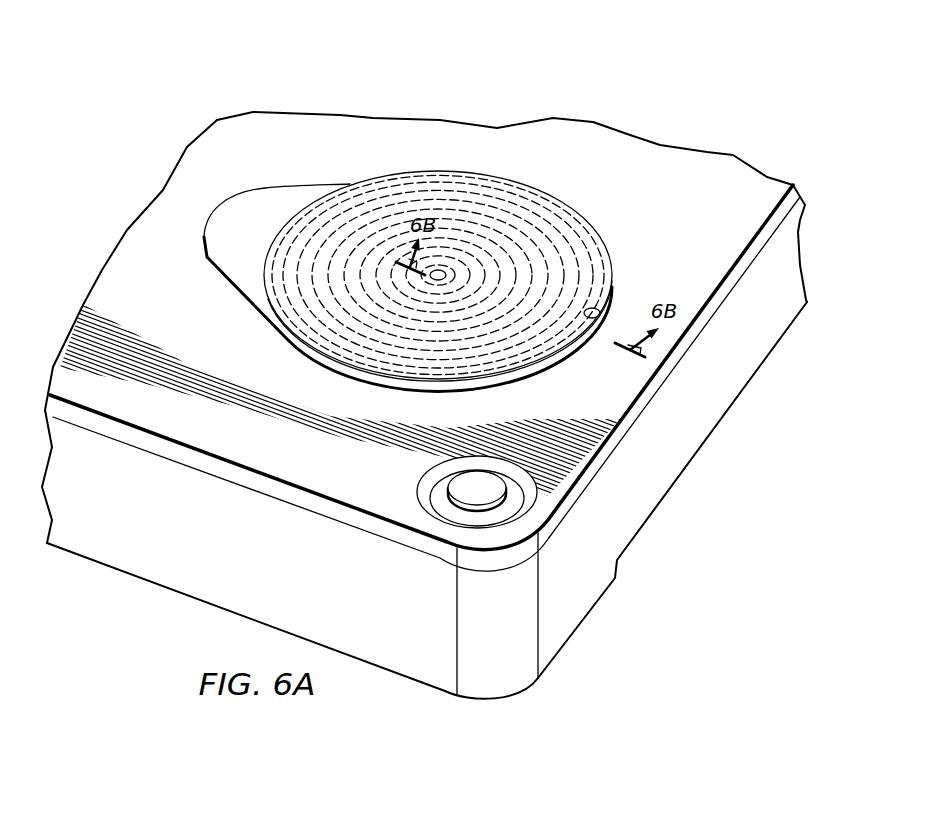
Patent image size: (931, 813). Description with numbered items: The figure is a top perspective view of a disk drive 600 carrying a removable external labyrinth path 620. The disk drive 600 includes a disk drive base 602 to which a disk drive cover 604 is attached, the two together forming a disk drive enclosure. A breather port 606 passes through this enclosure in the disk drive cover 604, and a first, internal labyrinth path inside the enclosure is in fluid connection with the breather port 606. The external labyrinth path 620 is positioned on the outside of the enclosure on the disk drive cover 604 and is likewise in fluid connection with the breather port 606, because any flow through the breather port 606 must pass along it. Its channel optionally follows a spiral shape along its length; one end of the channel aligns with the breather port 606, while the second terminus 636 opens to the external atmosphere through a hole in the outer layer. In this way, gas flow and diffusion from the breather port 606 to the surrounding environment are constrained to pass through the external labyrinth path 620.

The disk drive 600 is at (303, 62).
The disk drive base 602 is at (150, 567).
The disk drive cover 604 is at (240, 128).
The breather port 606 is at (443, 268).
The external labyrinth path 620 is at (560, 236).
The second terminus 636 is at (592, 318).